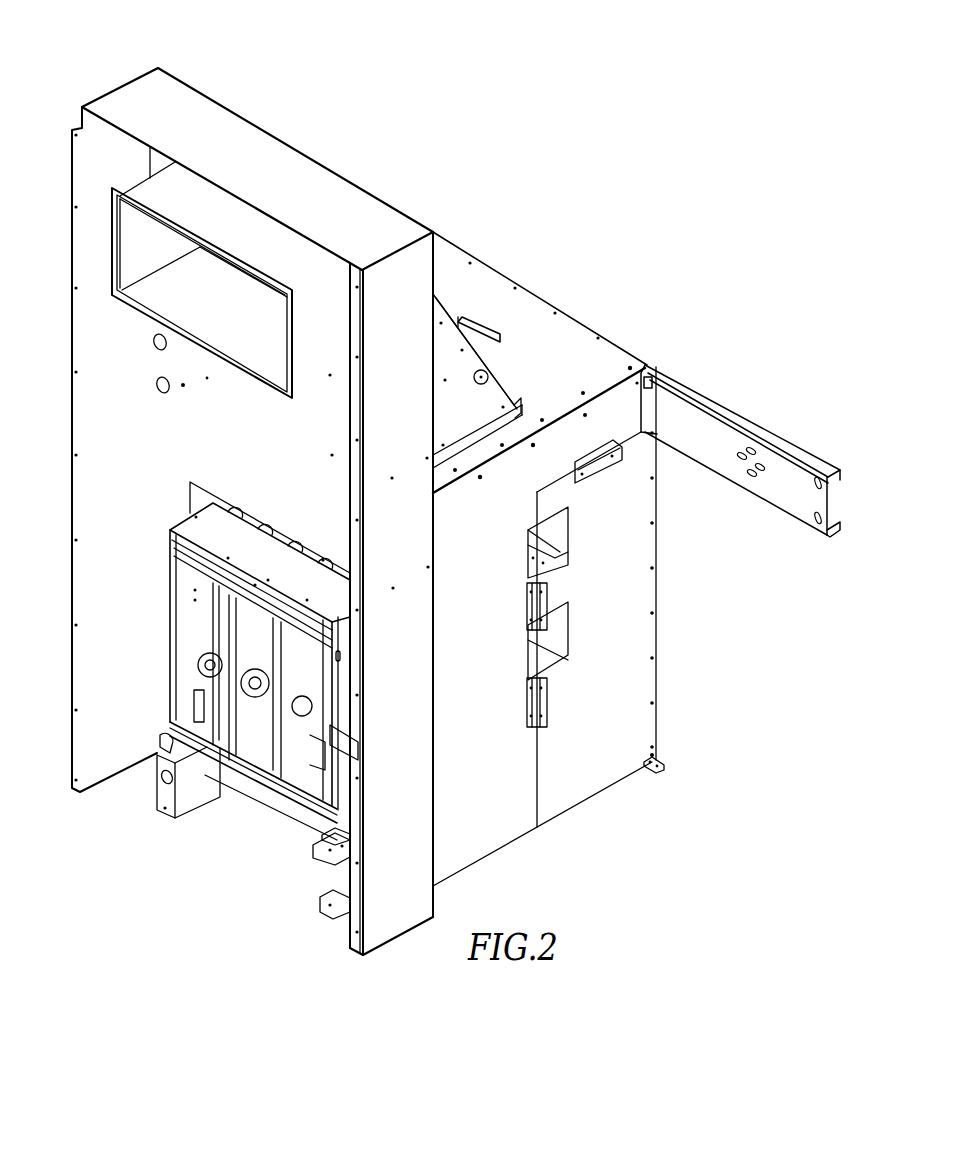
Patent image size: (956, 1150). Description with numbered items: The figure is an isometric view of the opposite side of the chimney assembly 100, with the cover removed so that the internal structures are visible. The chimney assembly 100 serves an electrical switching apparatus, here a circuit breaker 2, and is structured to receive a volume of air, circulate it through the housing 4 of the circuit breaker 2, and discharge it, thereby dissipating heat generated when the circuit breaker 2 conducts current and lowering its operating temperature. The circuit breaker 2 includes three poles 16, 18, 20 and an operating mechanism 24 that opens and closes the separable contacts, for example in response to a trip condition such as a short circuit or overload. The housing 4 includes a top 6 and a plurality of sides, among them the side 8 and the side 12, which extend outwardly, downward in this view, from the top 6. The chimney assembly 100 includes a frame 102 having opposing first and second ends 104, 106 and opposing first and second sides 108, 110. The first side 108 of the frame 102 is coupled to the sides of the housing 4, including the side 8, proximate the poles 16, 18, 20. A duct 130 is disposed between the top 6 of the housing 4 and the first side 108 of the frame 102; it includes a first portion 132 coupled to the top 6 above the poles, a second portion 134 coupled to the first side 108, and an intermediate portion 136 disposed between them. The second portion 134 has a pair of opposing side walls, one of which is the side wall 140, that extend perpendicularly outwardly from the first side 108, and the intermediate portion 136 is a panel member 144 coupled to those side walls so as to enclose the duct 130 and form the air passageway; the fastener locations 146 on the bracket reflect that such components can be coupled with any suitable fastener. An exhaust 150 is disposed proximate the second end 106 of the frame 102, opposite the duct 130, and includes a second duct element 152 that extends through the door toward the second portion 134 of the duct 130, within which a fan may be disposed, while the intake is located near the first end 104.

The chimney assembly 100 is at (332, 146).
The circuit breaker 2 is at (601, 864).
The housing 4 is at (634, 788).
The top 6 is at (588, 370).
The side 8 is at (496, 639).
The side 12 is at (654, 588).
The pole 16 is at (286, 800).
The pole 18 is at (240, 780).
The pole 20 is at (197, 750).
The operating mechanism 24 is at (183, 620).
The frame 102 is at (212, 113).
The first end 104 is at (343, 962).
The second end 106 is at (103, 80).
The first side 108 is at (433, 628).
The second side 110 is at (356, 661).
The duct 130 is at (464, 268).
The first portion 132 is at (490, 462).
The second portion 134 is at (442, 353).
The intermediate portion 136 is at (480, 328).
The side wall 140 is at (482, 420).
The panel member 144 is at (466, 334).
The fastener hole 146 is at (488, 375).
The exhaust 150 is at (102, 221).
The second duct element 152 is at (255, 345).